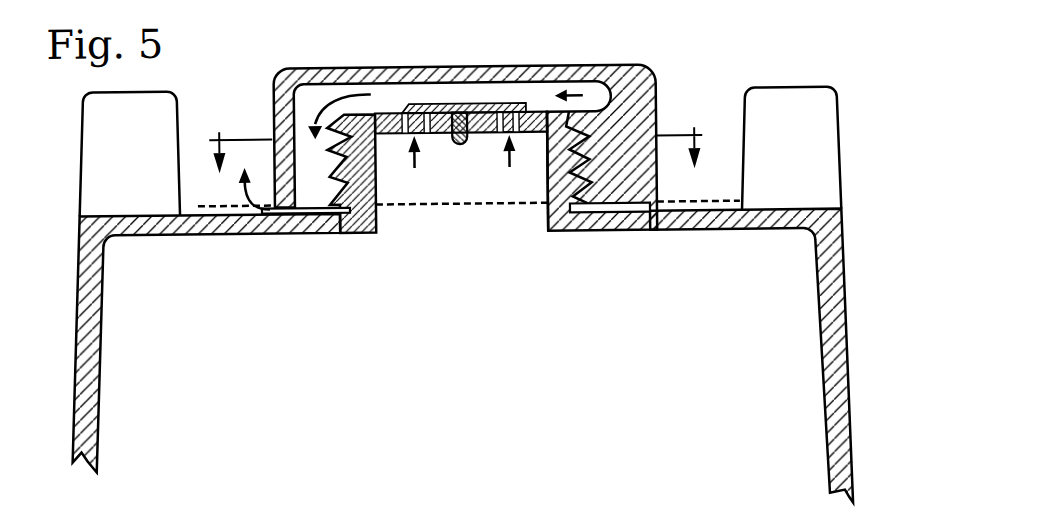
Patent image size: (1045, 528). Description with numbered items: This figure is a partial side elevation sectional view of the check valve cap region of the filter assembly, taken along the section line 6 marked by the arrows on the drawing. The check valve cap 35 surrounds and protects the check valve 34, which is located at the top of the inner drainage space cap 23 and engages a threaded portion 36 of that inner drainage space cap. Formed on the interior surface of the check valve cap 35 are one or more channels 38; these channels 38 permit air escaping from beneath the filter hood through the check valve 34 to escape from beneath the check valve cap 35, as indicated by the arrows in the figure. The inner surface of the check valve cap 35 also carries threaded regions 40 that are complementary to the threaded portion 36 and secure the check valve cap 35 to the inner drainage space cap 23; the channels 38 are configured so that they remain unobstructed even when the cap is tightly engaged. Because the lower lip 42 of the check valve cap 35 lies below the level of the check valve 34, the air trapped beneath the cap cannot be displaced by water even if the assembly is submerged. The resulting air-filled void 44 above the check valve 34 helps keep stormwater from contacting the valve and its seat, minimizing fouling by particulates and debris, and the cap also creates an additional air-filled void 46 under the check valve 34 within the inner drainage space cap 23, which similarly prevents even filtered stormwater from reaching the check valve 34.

The section line 6— 6 is at (456, 168).
The inner drainage space cap 23 is at (852, 383).
The check valve 34 is at (402, 102).
The check valve cap 35 is at (452, 66).
The threaded portion 36 is at (330, 173).
The channels 38 is at (316, 80).
The threaded regions 40 is at (583, 128).
The lower lip 42 is at (628, 214).
The air-filled void 44 is at (586, 80).
The additional air-filled void 46 is at (443, 189).